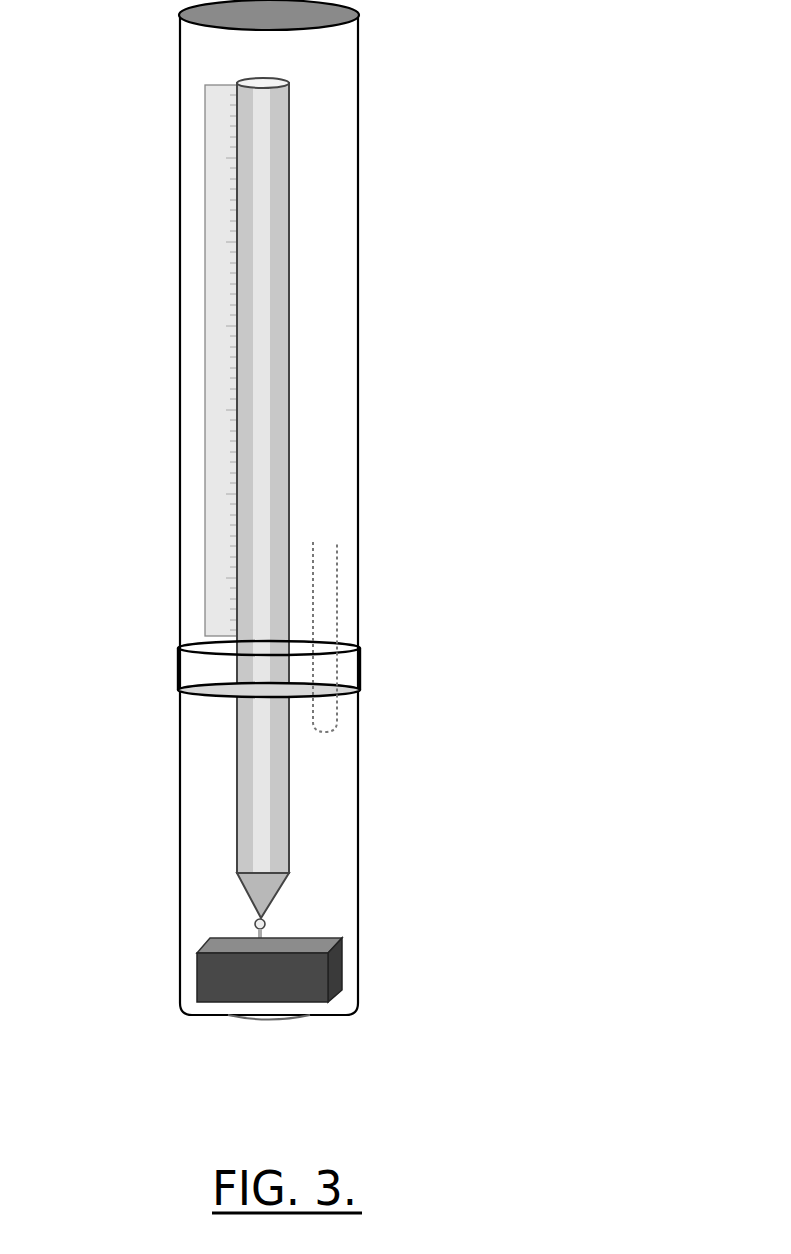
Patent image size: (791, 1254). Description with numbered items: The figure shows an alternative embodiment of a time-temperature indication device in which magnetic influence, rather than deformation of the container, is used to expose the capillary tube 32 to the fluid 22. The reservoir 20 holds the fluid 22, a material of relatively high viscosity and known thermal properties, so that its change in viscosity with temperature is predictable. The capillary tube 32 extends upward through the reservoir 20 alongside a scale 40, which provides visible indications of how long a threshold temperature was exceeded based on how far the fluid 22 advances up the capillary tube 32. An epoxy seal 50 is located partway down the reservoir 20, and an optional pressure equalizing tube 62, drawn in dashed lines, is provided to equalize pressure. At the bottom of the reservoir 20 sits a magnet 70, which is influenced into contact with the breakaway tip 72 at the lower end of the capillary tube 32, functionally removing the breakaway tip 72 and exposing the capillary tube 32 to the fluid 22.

The reservoir 20 is at (358, 830).
The fluid 22 is at (323, 898).
The capillary tube 32 is at (298, 193).
The scale 40 is at (200, 185).
The epoxy seal 50 is at (185, 678).
The pressure equalizing tube 62 is at (340, 600).
The magnet 70 is at (243, 982).
The breakaway tip 72 is at (247, 900).